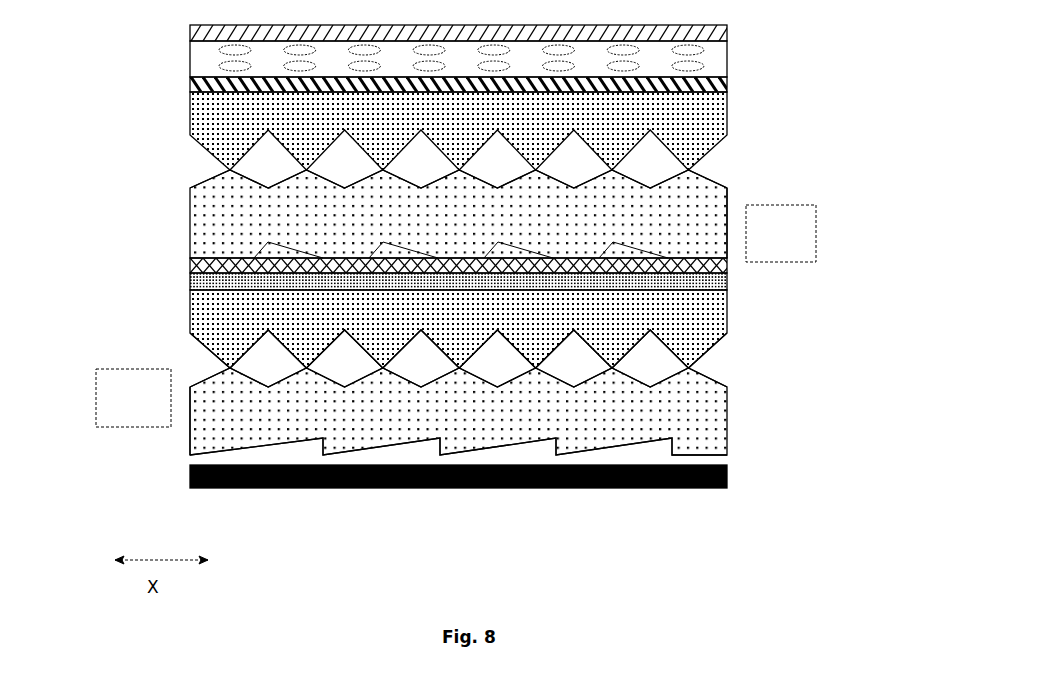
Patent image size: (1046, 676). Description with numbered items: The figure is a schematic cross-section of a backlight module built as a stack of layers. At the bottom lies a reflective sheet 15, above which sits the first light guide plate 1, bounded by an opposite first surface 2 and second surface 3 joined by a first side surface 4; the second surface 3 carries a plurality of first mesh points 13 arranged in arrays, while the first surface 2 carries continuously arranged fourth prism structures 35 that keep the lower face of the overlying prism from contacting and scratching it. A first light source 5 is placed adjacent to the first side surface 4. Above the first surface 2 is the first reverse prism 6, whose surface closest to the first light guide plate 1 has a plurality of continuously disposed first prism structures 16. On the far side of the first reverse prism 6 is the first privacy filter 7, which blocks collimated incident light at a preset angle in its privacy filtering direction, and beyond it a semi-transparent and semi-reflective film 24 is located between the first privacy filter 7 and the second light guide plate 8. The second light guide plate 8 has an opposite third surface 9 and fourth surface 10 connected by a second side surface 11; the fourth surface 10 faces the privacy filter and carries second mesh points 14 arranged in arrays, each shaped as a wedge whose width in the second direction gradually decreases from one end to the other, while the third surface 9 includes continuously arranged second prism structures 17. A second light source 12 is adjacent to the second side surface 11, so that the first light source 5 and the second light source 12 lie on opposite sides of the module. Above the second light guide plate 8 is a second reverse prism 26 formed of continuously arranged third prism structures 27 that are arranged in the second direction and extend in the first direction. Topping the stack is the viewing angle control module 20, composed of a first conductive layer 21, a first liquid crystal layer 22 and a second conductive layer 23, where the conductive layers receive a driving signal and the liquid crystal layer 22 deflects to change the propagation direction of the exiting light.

The first light guide plate 1 is at (492, 422).
The first surface 2 is at (514, 371).
The fourth prism structures 35 is at (713, 380).
The second surface 3 is at (496, 443).
The first mesh points 13 is at (670, 445).
The first side surface 4 is at (188, 388).
The first light source 5 is at (96, 398).
The first reverse prism 6 is at (500, 338).
The first prism structures 16 is at (690, 338).
The first privacy filter 7 is at (190, 285).
The second light guide plate 8 is at (433, 202).
The third surface 9 is at (417, 182).
The second prism structures 17 is at (212, 176).
The fourth surface 10 is at (501, 327).
The second mesh points 14 is at (501, 327).
The second side surface 11 is at (727, 233).
The second light source 12 is at (816, 233).
The reflective sheet 15 is at (727, 477).
The viewing angle control module 20 is at (398, 56).
The first conductive layer 21 is at (190, 84).
The first liquid crystal layer 22 is at (200, 58).
The second conductive layer 23 is at (190, 34).
The semi-transparent and semi-reflective film 24 is at (190, 265).
The second reverse prism 26 is at (413, 131).
The third prism structures 27 is at (210, 139).